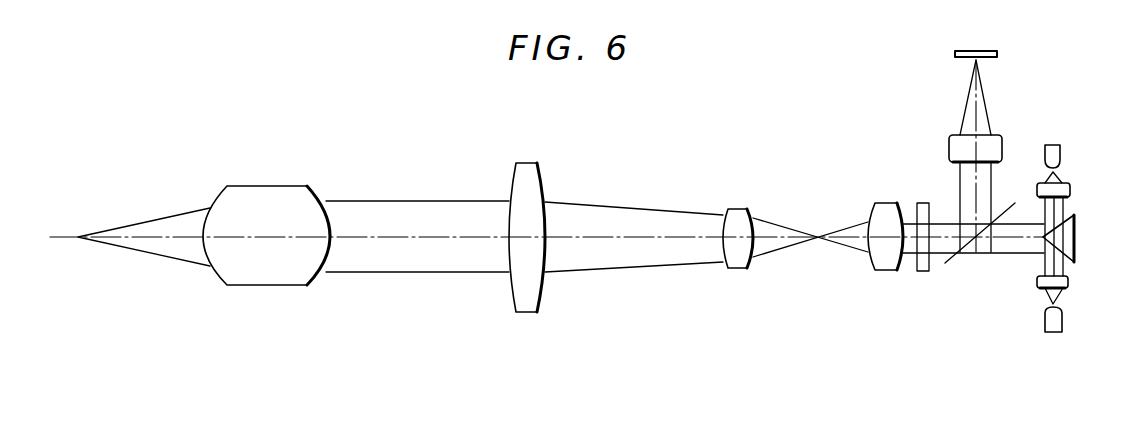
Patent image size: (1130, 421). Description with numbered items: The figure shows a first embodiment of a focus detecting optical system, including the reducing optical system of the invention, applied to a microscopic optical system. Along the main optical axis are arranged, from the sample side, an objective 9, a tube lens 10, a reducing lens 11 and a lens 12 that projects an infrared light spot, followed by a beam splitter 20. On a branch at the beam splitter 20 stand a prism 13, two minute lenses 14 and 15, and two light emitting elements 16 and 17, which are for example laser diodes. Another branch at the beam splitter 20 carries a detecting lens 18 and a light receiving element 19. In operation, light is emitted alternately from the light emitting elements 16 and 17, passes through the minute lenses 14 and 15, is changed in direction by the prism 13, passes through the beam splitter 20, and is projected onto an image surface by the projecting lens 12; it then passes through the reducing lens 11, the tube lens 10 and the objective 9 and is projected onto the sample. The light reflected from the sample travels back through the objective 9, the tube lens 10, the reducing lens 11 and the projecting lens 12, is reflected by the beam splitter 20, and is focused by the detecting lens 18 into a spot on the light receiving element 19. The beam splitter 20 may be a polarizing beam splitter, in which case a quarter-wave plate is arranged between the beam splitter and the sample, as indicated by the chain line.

The objective 9 is at (295, 287).
The tube lens 10 is at (535, 313).
The reducing lens 11 is at (744, 270).
The projecting lens 12 is at (892, 272).
The prism 13 is at (1076, 223).
The minute lens 14 is at (1070, 283).
The minute lens 15 is at (1071, 187).
The light emitting element 16 is at (1053, 334).
The light emitting element 17 is at (1061, 150).
The detecting lens 18 is at (947, 140).
The light receiving element 19 is at (954, 53).
The beam splitter 20 is at (957, 262).